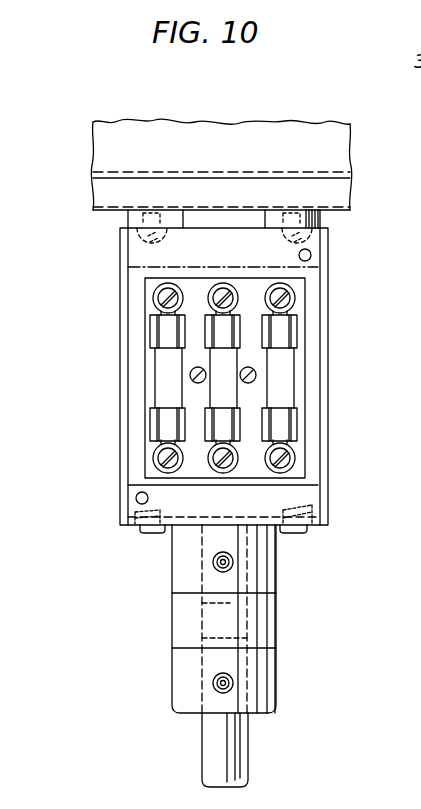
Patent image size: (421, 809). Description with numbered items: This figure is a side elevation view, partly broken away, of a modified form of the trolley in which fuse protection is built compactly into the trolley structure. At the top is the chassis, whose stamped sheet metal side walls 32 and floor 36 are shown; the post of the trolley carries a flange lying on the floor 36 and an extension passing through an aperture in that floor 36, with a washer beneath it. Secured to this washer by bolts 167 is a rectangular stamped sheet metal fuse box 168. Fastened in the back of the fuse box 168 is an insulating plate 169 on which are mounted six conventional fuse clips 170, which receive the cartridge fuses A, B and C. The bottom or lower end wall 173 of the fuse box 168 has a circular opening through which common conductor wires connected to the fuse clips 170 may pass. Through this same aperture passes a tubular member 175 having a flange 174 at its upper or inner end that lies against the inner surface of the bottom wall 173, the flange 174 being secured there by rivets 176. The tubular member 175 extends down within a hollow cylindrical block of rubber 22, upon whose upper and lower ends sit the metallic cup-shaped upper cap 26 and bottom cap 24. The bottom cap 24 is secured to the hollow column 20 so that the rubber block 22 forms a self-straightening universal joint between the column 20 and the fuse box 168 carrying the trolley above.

The hollow tube or column 20 is at (232, 745).
The hollow cylindrical block or tube of rubber 22 is at (276, 622).
The bottom cap 24 is at (182, 675).
The upper cap 26 is at (276, 560).
The side walls of the chassis 32 is at (337, 152).
The floor of the chassis 36 is at (350, 212).
The bolts 167 is at (125, 249).
The fuse box 168 is at (137, 343).
The insulating plate 169 is at (150, 388).
The fuse clips 170 is at (300, 323).
The bottom or lower end wall 173 is at (315, 532).
The flange 174 is at (165, 530).
The tubular member 175 is at (180, 540).
The rivets 176 is at (118, 506).